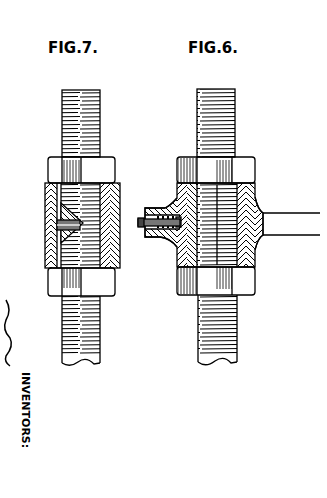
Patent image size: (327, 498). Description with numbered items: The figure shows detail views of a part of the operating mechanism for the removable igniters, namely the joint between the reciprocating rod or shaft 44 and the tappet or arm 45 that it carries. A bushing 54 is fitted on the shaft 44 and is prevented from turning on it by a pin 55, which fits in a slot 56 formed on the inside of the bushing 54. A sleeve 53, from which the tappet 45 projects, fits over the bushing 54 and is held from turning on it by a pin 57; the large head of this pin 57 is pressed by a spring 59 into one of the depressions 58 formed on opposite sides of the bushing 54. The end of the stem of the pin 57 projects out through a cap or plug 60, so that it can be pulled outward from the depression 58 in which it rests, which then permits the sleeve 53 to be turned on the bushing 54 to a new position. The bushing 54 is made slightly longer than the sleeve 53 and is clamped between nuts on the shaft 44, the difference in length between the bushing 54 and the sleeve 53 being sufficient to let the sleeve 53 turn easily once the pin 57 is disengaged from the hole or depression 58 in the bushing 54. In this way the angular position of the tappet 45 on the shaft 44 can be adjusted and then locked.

In FIG. 7, the shaft 44 is at (102, 351).
In FIG. 6, the shaft 44 is at (238, 341).
In FIG. 6, the tappet 45 is at (300, 213).
In FIG. 7, the sleeve 53 is at (46, 210).
In FIG. 6, the sleeve 53 is at (256, 252).
In FIG. 6, the bushing 54 is at (258, 191).
In FIG. 7, the pin 55 is at (57, 226).
In FIG. 7, the slot 56 is at (46, 262).
In FIG. 6, the pin 57 is at (142, 234).
In FIG. 6, the depressions 58 is at (258, 222).
In FIG. 6, the spring 59 is at (170, 212).
In FIG. 6, the cap 60 is at (141, 219).